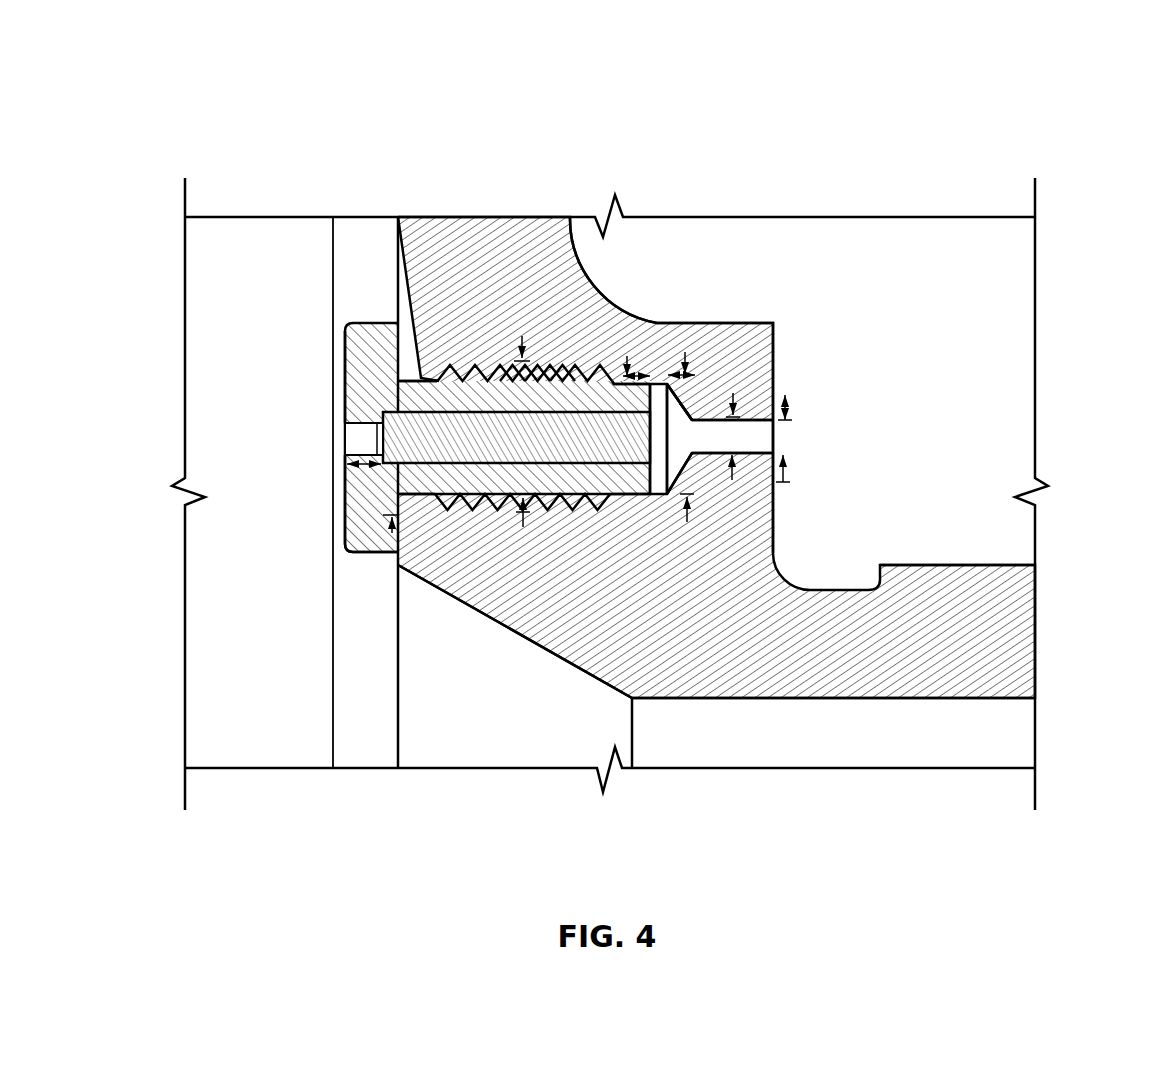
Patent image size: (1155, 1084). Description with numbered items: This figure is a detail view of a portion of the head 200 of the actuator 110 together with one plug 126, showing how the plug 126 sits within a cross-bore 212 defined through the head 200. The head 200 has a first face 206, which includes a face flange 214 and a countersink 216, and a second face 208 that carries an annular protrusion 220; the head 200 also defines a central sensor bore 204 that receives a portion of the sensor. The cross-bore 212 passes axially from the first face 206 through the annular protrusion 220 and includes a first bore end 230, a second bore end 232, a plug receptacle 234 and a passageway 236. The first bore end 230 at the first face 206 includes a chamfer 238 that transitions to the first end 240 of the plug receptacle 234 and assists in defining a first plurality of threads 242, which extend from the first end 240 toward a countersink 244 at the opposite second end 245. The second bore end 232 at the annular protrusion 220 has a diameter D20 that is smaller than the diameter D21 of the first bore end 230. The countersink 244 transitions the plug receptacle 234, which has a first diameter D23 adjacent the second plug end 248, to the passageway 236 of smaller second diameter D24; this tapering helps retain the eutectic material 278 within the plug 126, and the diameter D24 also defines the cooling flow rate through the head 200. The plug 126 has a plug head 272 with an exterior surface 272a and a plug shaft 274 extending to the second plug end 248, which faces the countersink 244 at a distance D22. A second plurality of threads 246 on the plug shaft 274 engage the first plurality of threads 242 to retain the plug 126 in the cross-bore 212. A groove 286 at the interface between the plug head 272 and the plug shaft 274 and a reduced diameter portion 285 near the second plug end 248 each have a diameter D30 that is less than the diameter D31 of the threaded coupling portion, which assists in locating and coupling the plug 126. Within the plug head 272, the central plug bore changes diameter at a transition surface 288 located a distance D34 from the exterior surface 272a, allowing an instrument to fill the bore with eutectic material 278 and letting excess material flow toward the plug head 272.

The actuator 110 is at (1036, 114).
The head 200 is at (779, 188).
The central sensor bore 204 is at (940, 698).
The first face 206 is at (432, 555).
The second face 208 is at (636, 303).
The cross-bore 212 is at (630, 498).
The face flange 214 is at (348, 262).
The countersink 216 is at (377, 443).
The annular protrusion 220 is at (748, 303).
The first bore end 230 is at (430, 378).
The second bore end 232 is at (790, 407).
The plug receptacle 234 is at (553, 364).
The passageway 236 is at (735, 393).
The chamfer 238 is at (431, 500).
The first end 240 is at (475, 355).
The first plurality of threads 242 is at (540, 358).
The countersink 244 is at (697, 407).
The second end 245 is at (711, 409).
The second plurality of threads 246 is at (614, 378).
The second plug end 248 is at (672, 500).
The plug head 272 is at (399, 360).
The exterior surface 272a is at (345, 532).
The plug shaft 274 is at (443, 513).
The eutectic material 278 is at (383, 464).
The reduced diameter portion 285 is at (628, 356).
The groove 286 is at (345, 372).
The transition surface 288 is at (383, 422).
The plug 126 is at (516, 368).
The diameter of second bore end D20 is at (787, 472).
The diameter of first bore end D21 is at (390, 533).
The distance D22 is at (686, 352).
The first diameter D23 is at (687, 510).
The second diameter D24 is at (732, 480).
The diameter at groove D30 is at (522, 533).
The diameter at coupling portion D31 is at (524, 336).
The distance D34 is at (362, 467).